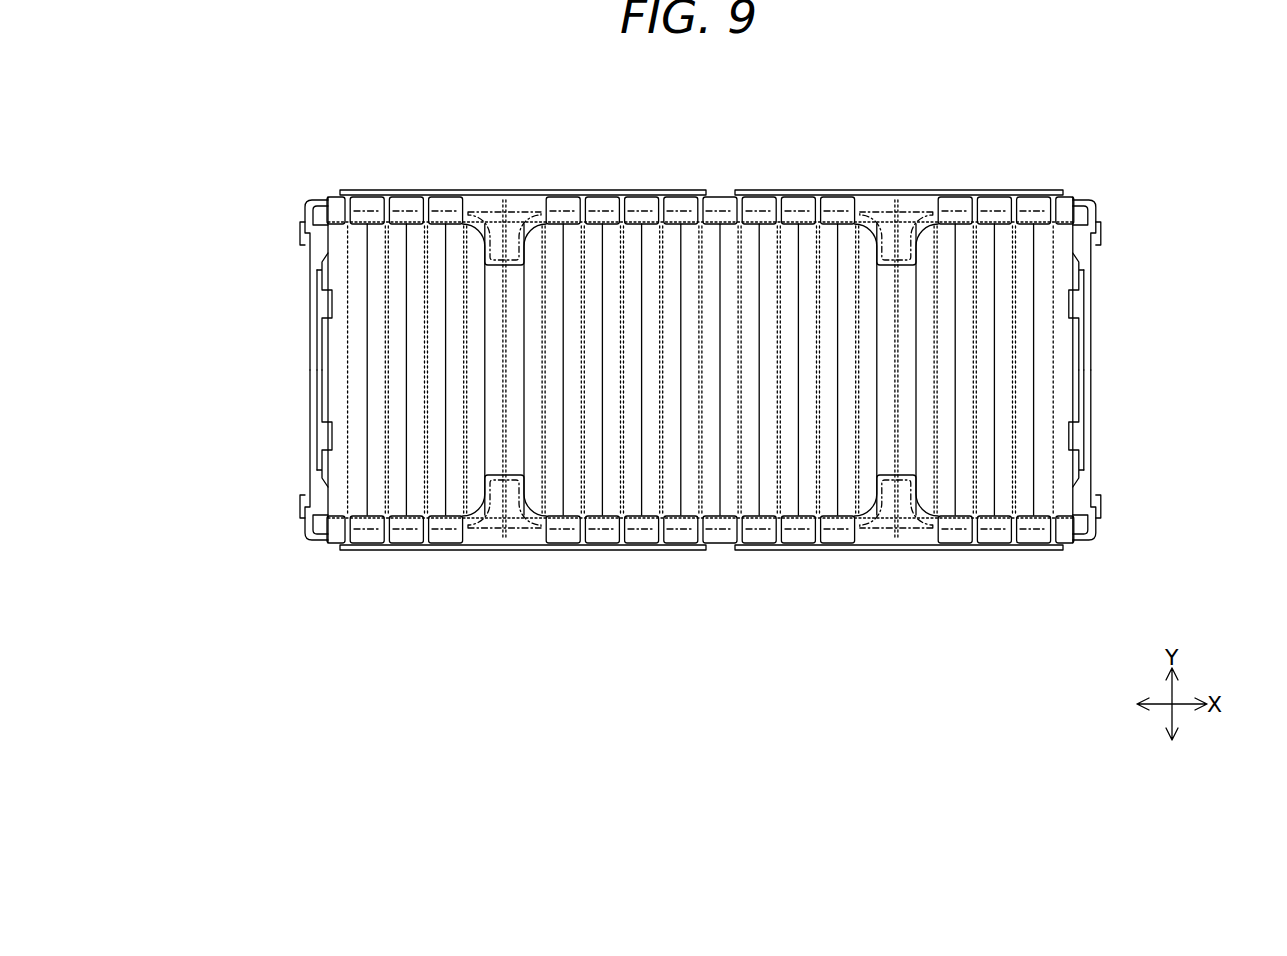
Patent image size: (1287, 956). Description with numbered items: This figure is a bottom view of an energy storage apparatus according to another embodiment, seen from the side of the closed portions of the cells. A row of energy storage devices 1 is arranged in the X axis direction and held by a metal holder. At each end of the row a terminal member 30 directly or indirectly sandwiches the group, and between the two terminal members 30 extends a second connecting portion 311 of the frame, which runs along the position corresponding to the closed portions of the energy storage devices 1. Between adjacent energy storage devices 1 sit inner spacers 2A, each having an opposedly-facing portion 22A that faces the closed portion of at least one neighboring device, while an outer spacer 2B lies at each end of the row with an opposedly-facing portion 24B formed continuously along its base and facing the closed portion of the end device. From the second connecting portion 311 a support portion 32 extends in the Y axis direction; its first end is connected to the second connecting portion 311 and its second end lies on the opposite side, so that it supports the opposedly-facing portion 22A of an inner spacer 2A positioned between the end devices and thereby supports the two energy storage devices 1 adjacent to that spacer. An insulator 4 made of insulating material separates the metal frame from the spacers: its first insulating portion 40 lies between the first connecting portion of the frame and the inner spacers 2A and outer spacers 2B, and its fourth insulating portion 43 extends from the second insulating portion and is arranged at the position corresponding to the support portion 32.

The energy storage device 1 is at (714, 438).
The terminal member 30 is at (305, 316).
The opposedly-facing portion 24B is at (707, 370).
The outer spacer 2B is at (332, 468).
The second connecting portion 311 is at (769, 205).
The first insulating portion 40 is at (720, 374).
The insulator 4 is at (998, 172).
The fourth insulating portion 43 is at (483, 252).
The support portion 32 is at (509, 258).
The opposedly-facing portion 22A is at (700, 342).
The inner spacer 2A is at (689, 353).